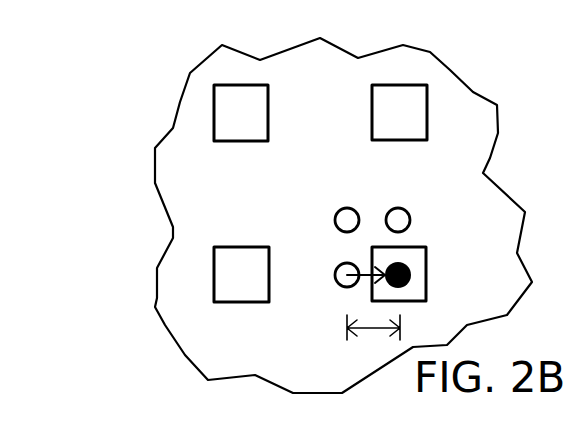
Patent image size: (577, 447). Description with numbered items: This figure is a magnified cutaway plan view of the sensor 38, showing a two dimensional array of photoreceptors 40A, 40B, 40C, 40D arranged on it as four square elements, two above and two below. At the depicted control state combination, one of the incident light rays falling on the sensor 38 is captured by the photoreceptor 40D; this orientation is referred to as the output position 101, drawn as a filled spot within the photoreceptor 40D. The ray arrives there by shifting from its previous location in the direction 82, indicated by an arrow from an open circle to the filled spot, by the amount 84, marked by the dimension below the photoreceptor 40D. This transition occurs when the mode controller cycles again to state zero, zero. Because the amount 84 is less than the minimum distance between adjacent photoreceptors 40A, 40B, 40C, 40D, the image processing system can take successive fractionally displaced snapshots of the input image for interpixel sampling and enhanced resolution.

The sensor 38 is at (448, 67).
The photoreceptor 40A is at (423, 115).
The photoreceptor 40B is at (264, 115).
The photoreceptor 40C is at (264, 277).
The photoreceptor 40D is at (423, 276).
The direction 82 is at (365, 273).
The output position 101 is at (421, 266).
The amount 84 is at (372, 331).